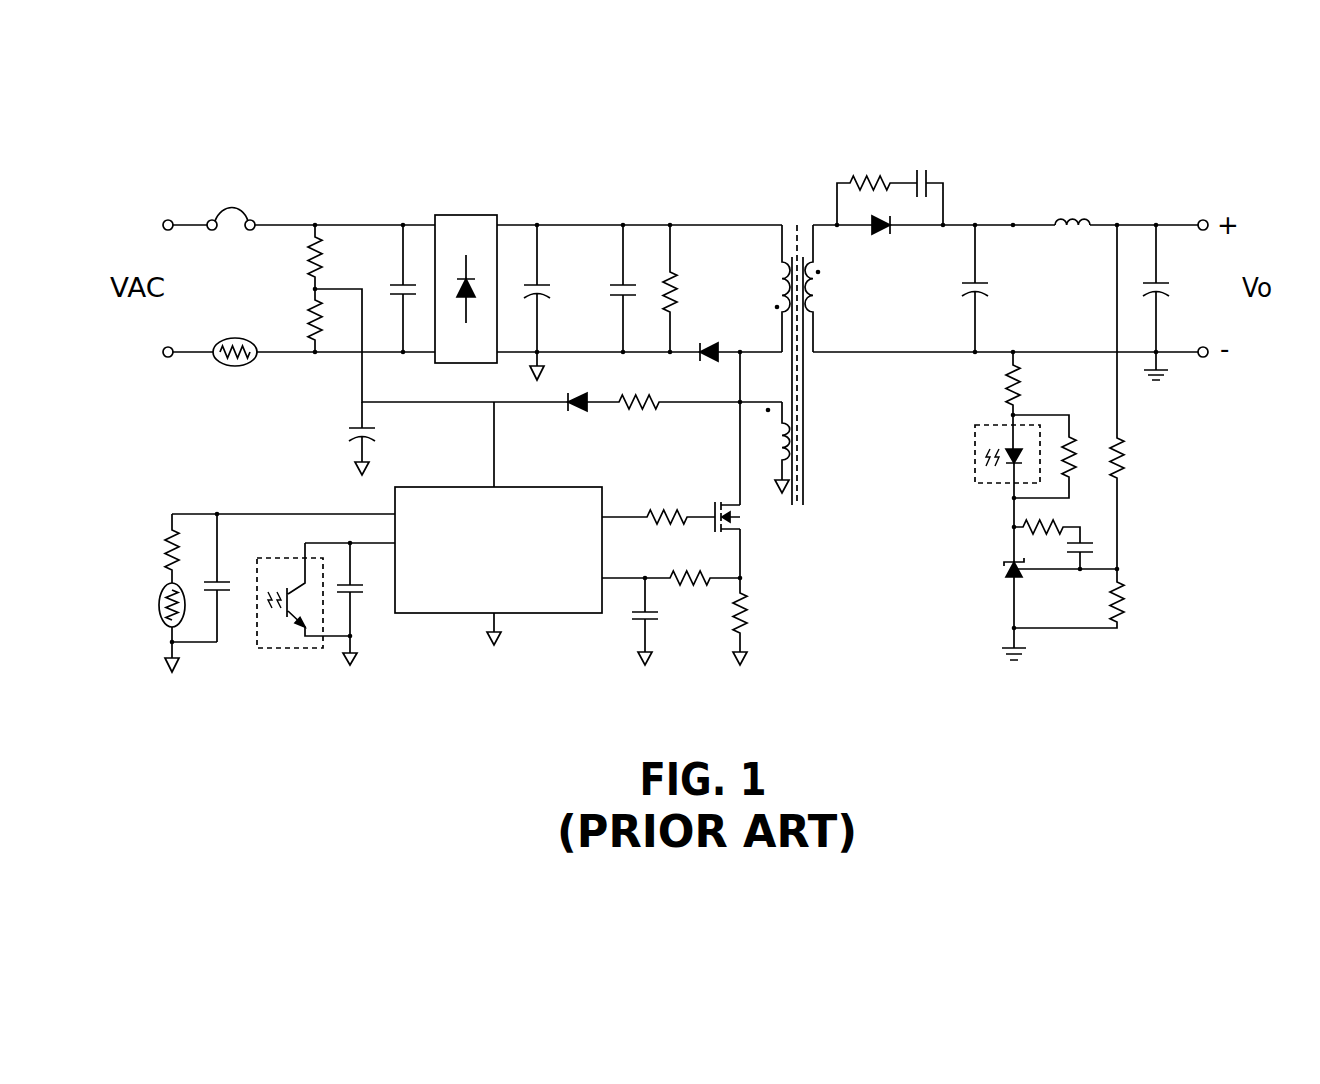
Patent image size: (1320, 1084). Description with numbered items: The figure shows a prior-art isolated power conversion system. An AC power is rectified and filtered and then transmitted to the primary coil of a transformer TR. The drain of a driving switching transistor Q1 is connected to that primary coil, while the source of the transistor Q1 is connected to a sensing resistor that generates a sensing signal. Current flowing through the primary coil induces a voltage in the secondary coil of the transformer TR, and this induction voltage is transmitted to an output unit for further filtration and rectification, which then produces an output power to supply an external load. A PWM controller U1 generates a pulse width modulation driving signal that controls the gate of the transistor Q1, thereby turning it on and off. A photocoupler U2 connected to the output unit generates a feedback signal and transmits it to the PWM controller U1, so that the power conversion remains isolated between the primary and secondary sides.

The transformer TR is at (783, 213).
The driving switching transistor Q1 is at (750, 518).
The PWM controller U1 is at (430, 614).
The photocoupler U2 is at (262, 613).